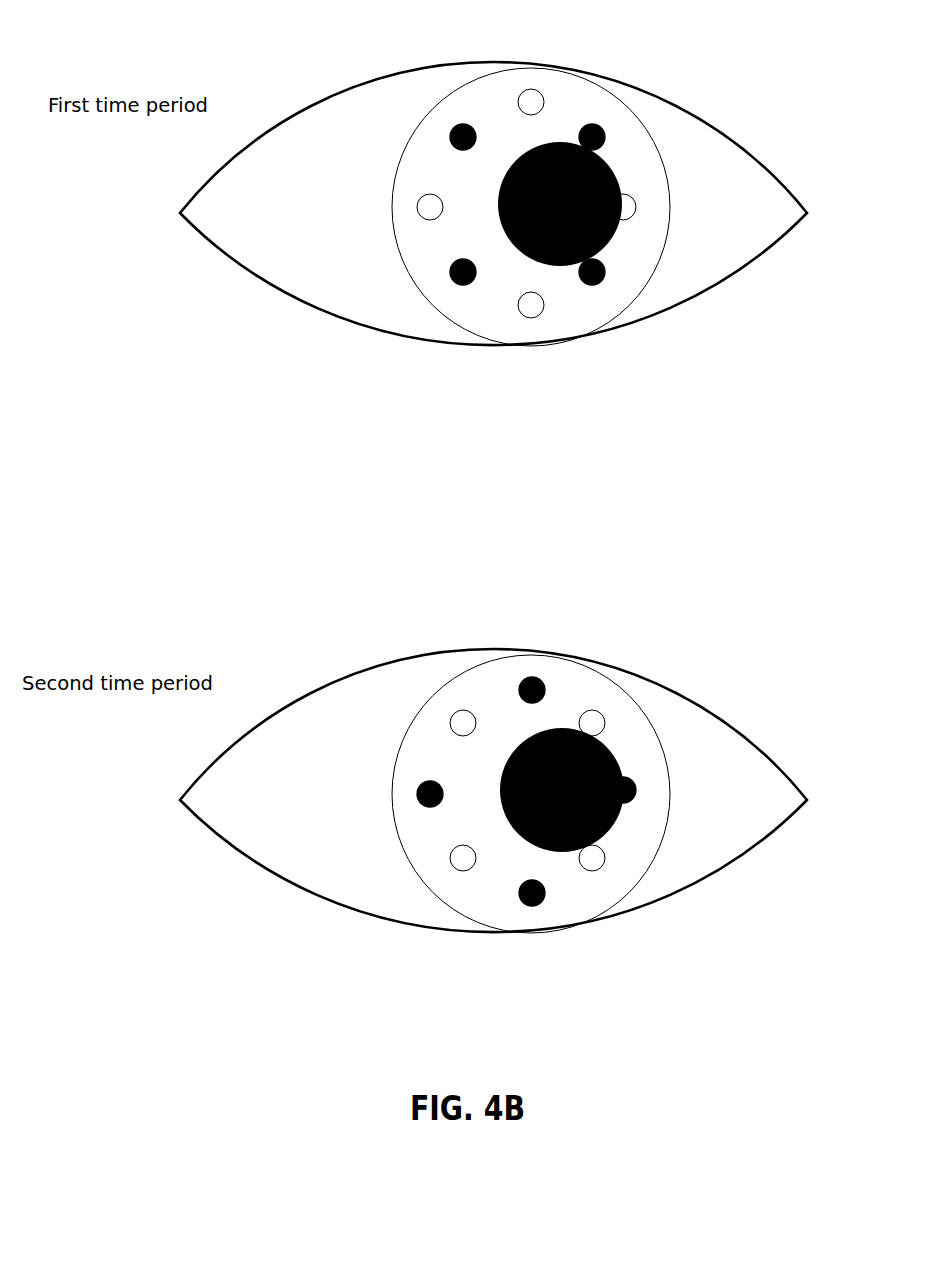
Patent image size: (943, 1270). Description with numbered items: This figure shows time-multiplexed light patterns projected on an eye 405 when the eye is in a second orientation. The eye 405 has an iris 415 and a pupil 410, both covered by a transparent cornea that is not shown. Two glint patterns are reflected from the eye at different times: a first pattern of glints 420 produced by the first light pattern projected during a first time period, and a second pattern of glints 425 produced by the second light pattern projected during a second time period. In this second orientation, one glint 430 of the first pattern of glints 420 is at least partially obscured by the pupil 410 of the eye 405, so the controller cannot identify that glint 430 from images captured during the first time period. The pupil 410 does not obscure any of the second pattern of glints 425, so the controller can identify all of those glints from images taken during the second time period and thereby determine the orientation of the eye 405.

The eye 405 is at (377, 330).
The pupil 410 is at (540, 145).
The iris 415 is at (640, 178).
The first pattern of glints 420 is at (605, 965).
The second pattern of glints 425 is at (735, 945).
The glint 430 is at (628, 203).